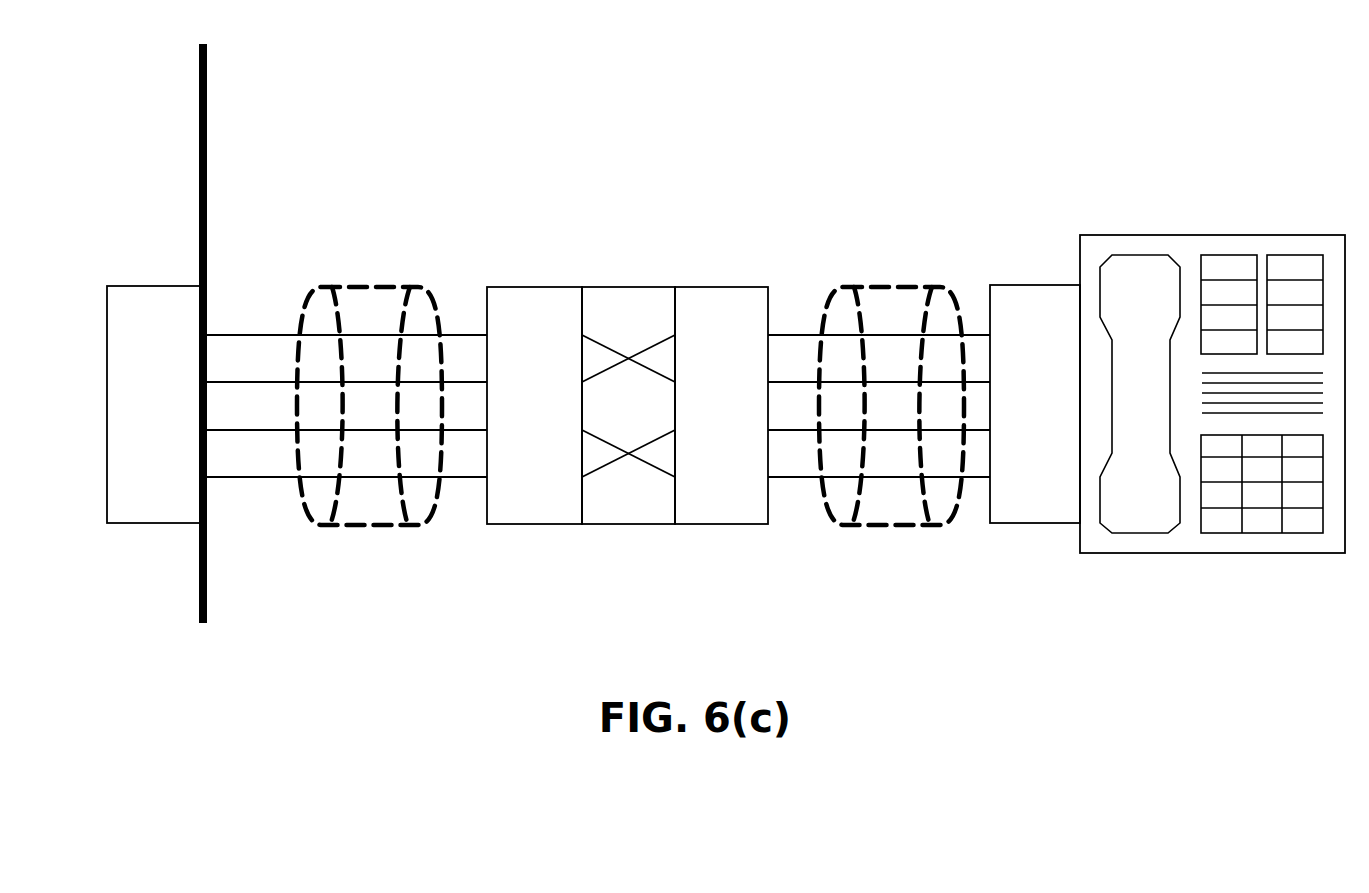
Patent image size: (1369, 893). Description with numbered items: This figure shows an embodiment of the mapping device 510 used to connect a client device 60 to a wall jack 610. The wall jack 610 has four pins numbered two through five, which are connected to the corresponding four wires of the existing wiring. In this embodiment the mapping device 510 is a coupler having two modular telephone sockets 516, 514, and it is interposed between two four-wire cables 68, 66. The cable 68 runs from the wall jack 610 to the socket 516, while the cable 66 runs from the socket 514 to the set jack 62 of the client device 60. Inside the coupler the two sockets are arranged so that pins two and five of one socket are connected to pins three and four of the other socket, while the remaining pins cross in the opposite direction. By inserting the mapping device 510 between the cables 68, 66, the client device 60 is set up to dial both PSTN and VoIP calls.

The wall jack 610 is at (155, 284).
The four-wire cable 68 is at (367, 284).
The RJ-11 socket 516 is at (518, 286).
The mapping device 510 is at (623, 286).
The RJ-11 socket 514 is at (722, 286).
The four-wire cable 66 is at (888, 285).
The set jack 62 is at (1010, 284).
The client device 60 is at (1268, 234).